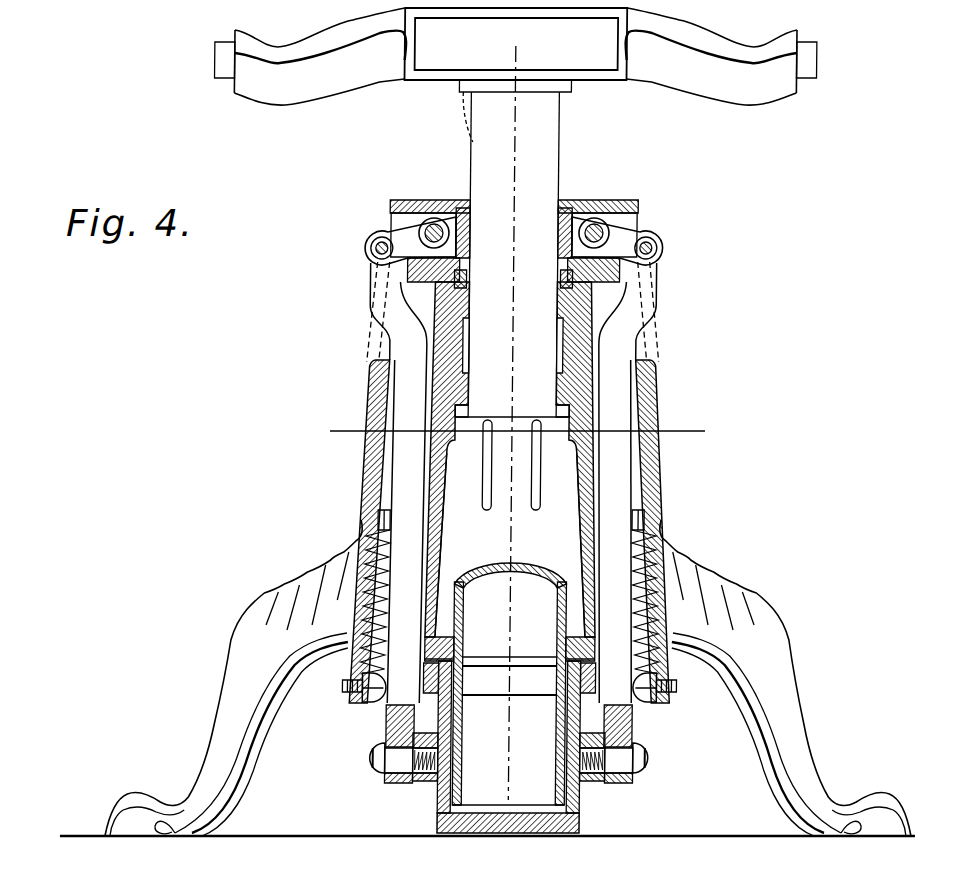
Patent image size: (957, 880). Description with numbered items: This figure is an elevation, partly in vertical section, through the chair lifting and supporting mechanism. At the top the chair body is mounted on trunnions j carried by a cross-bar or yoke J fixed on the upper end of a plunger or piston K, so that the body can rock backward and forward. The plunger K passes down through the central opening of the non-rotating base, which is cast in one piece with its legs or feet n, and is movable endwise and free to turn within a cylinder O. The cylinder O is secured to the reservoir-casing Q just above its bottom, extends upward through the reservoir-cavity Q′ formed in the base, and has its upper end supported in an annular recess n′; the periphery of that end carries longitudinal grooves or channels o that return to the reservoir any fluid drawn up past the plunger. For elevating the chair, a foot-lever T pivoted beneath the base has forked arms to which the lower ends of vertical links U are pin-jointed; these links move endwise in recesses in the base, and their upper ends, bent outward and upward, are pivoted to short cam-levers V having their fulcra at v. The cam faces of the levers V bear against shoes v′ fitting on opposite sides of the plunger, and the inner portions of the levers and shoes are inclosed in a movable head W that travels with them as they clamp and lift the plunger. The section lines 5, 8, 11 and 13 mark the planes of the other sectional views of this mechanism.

The cross-bar or yoke J is at (515, 56).
The trunnions j is at (214, 58).
The section line 5 5 is at (511, 417).
The plunger or piston K is at (543, 138).
The movable head W is at (622, 212).
The fulcra or pivots of the levers v is at (429, 222).
The shoes or plates v′ is at (463, 234).
The short links or levers V is at (514, 241).
The section line 8 8 is at (364, 240).
The cylinder O is at (511, 557).
The reservoir-cavity Q′ is at (576, 600).
The annular recess n′ is at (552, 411).
The section line 11 11 is at (513, 435).
The longitudinal grooves, ducts, or channels o is at (530, 500).
The vertical links or arms U is at (510, 531).
The reservoir-casing Q is at (646, 704).
The section line 13 13 is at (430, 722).
The foot-lever T is at (432, 780).
The legs or feet n is at (509, 678).